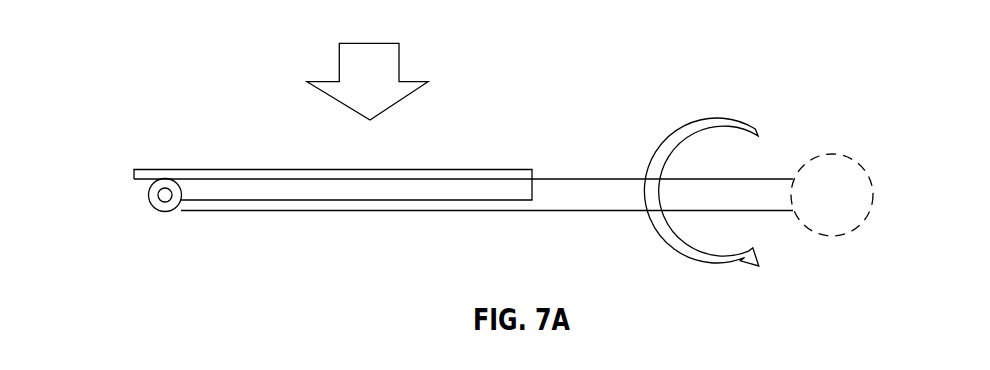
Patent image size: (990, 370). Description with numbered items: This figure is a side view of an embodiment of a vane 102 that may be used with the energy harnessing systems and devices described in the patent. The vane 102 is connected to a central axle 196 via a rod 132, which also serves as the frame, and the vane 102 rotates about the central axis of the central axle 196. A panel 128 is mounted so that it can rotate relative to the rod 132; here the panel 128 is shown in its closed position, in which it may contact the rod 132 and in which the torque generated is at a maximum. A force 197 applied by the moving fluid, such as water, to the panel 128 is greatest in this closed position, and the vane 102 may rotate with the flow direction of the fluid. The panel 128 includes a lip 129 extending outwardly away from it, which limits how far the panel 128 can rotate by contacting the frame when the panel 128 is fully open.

The vane 102 is at (445, 166).
The panel 128 is at (431, 170).
The lip 129 is at (137, 180).
The rod 132 is at (421, 211).
The central axle 196 is at (848, 170).
The force 197 is at (390, 92).